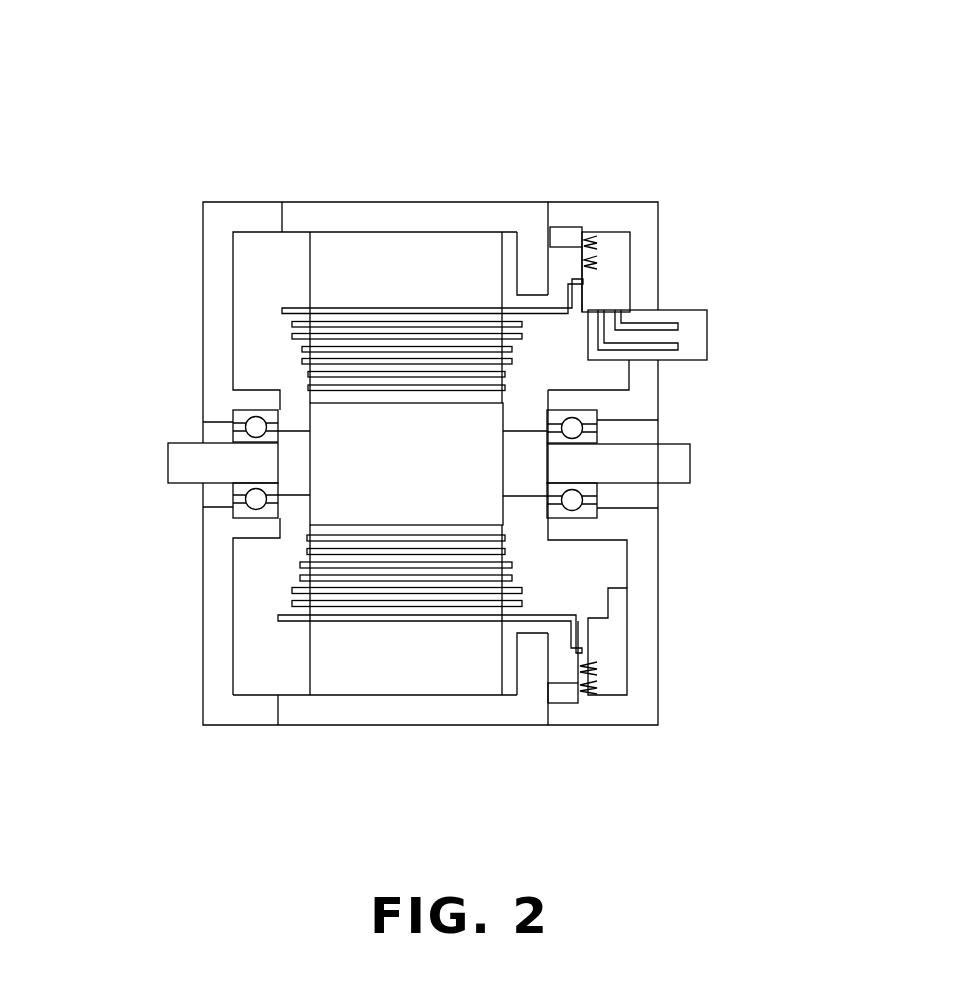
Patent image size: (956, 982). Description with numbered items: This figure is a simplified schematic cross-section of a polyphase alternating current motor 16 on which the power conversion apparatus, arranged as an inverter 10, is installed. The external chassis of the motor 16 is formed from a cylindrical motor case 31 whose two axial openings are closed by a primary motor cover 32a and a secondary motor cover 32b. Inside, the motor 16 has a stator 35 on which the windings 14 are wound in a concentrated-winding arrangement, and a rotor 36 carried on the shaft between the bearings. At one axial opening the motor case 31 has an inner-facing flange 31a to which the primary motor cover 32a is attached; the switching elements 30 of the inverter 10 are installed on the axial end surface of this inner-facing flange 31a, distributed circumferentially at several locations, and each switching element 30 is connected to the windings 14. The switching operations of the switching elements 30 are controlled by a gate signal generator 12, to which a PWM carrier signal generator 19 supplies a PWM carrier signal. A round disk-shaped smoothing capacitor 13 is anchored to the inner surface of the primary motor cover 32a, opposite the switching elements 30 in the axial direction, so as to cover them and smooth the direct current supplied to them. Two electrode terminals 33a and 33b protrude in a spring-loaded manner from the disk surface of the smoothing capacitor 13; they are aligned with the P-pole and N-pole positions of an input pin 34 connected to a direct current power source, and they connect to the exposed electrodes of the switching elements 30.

The polyphase alternating current motor 16 is at (306, 153).
The secondary motor cover 32b is at (237, 200).
The primary motor cover 32a is at (638, 202).
The motor case 31 is at (380, 199).
The inner-facing flange 31a is at (525, 270).
The stator 35 is at (338, 278).
The rotor 36 is at (340, 463).
The windings 14 is at (293, 338).
The gate signal generator 12 is at (603, 454).
The PWM carrier signal generator 19 is at (560, 227).
The inverter 10 is at (793, 240).
The smoothing capacitor 13 is at (615, 297).
The switching elements 30 is at (563, 266).
The electrode terminal 33a is at (598, 240).
The electrode terminal 33b is at (598, 262).
The input pin 34 is at (705, 335).